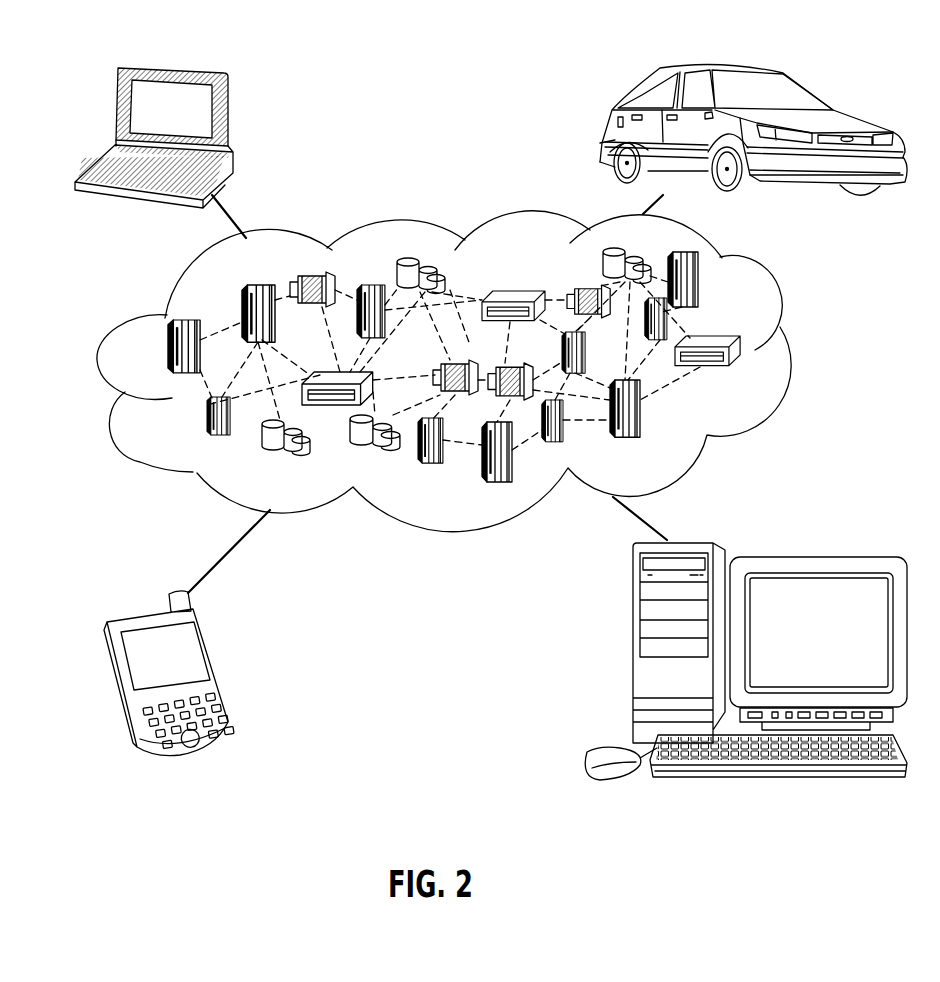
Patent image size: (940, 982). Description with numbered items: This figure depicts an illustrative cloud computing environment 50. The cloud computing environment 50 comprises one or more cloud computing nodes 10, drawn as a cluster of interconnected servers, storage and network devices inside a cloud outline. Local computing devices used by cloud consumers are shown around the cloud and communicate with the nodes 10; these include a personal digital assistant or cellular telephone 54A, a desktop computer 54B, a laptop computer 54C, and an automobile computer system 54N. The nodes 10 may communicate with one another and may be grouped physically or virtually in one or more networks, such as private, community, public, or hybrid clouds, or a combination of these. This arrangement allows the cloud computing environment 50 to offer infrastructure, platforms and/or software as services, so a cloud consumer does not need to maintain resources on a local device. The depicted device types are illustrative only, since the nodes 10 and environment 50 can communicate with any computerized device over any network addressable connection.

The cloud computing nodes 10 is at (758, 372).
The cloud computing environment 50 is at (786, 314).
The personal digital assistant (PDA) or cellular telephone 54A is at (218, 667).
The desktop computer 54B is at (630, 653).
The laptop computer 54C is at (229, 110).
The automobile computer system 54N is at (608, 122).